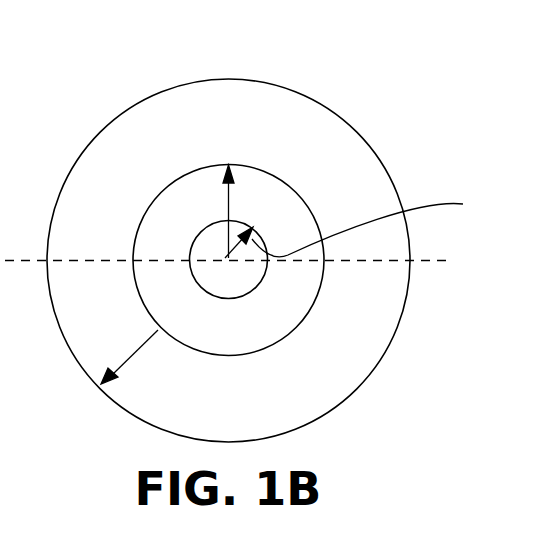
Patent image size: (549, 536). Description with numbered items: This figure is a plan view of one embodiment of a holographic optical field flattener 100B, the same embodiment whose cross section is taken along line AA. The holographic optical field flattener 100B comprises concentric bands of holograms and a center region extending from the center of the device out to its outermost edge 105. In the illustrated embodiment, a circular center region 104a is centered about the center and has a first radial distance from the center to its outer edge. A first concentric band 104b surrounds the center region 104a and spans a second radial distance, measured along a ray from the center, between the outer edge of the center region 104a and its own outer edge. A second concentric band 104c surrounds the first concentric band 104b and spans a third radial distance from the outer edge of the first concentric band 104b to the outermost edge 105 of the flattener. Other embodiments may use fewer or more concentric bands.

The holographic optical field flattener 100B is at (204, 31).
The outermost edge 105 is at (368, 139).
The center region 104a is at (205, 287).
The first concentric band 104b is at (204, 334).
The second concentric band 104c is at (253, 412).